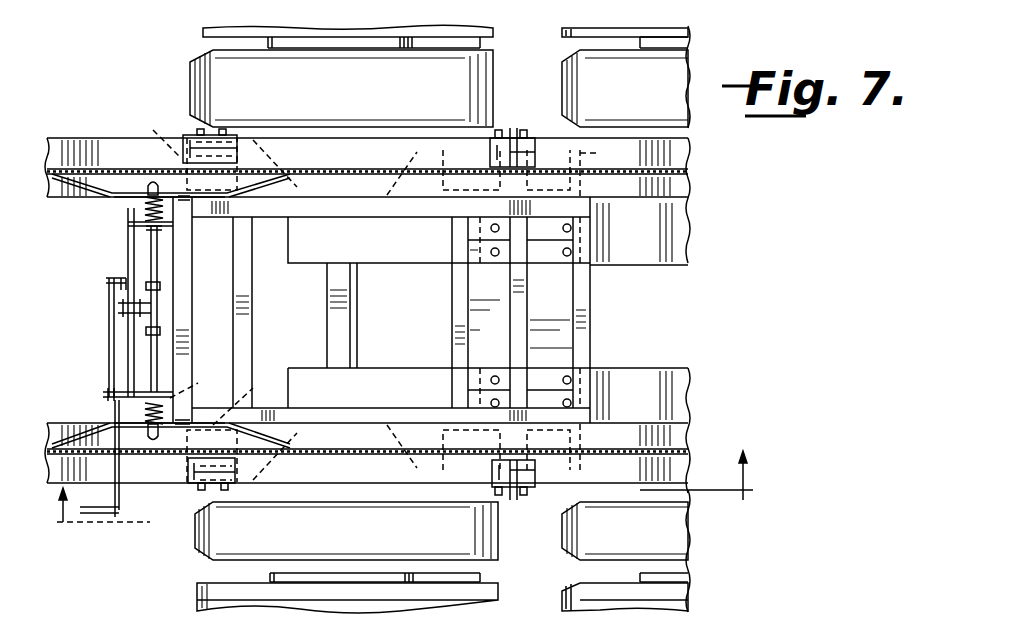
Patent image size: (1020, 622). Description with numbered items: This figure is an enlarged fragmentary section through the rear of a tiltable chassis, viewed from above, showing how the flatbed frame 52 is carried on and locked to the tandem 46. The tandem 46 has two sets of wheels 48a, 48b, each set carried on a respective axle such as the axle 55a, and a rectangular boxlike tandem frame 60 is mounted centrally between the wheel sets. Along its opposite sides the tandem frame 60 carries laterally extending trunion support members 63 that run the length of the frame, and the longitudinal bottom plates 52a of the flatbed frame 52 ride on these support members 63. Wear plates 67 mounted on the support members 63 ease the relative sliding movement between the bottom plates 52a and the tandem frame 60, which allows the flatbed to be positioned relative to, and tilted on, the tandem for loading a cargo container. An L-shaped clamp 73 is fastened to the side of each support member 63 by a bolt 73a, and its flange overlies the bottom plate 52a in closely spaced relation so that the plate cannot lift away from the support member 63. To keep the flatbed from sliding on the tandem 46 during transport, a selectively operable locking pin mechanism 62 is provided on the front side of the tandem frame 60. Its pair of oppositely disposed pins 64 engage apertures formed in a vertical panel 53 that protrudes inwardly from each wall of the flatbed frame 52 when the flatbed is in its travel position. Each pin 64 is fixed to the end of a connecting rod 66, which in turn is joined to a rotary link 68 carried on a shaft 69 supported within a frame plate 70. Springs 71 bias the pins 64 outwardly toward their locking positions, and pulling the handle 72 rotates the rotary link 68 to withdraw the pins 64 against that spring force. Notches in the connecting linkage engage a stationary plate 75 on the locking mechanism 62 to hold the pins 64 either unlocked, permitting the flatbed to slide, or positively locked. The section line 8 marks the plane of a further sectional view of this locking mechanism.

The section line 8- 8 is at (405, 505).
The tandem 46 is at (600, 350).
The tandem wheels 48a is at (190, 62).
The tandem wheels 48b is at (690, 118).
The frame 52 is at (302, 152).
The bottom plates 52a is at (362, 152).
The vertical panel 53 is at (185, 200).
The axle 55a is at (362, 300).
The tandem frame 60 is at (592, 302).
The locking pin mechanism 62 is at (110, 337).
The support members 63 is at (612, 470).
The pins 64 is at (150, 182).
The connecting rod 66 is at (160, 270).
The wear plates 67 is at (245, 138).
The rotary link 68 is at (160, 305).
The shaft 69 is at (118, 306).
The frame plate 70 is at (128, 246).
The springs 71 is at (140, 208).
The handle 72 is at (100, 513).
The L-shaped clamp 73 is at (193, 135).
The bolt 73a is at (222, 129).
The stationary plate 75 is at (106, 392).